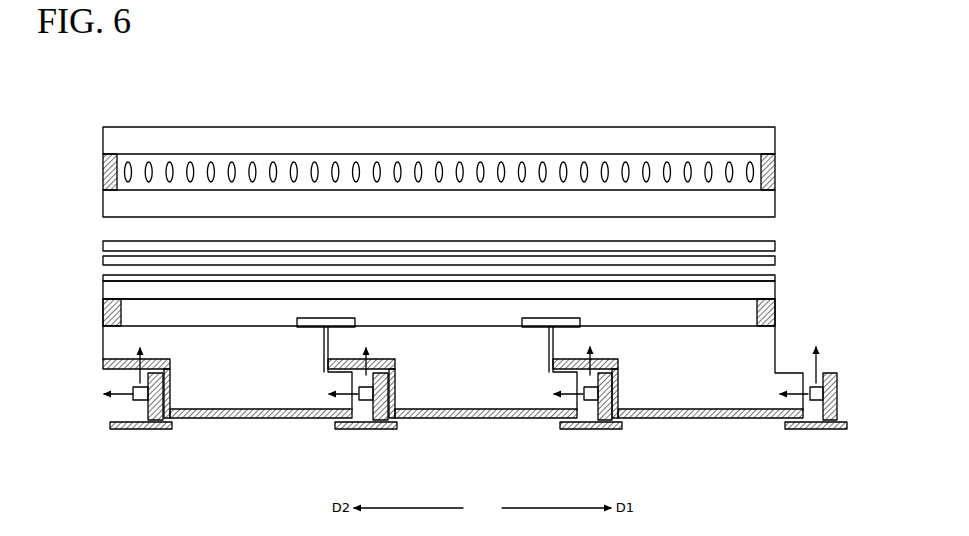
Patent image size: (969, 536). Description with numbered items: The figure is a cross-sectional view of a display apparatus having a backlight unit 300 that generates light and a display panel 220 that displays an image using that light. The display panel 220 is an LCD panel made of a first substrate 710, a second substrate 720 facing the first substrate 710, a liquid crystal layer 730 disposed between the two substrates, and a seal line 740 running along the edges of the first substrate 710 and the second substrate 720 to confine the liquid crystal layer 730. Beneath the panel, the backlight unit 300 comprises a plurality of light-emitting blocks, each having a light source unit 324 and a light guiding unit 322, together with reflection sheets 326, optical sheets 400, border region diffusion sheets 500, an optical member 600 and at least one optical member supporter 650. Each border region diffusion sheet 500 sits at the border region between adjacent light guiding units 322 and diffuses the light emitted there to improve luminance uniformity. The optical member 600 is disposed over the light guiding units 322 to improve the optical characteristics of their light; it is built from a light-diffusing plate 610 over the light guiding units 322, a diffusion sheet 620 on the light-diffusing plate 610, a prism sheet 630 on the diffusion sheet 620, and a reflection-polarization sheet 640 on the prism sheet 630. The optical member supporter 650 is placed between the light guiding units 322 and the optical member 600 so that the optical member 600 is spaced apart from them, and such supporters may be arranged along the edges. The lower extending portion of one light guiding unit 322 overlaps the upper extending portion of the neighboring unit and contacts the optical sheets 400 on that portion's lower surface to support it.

The display panel 220 is at (439, 138).
The seal line 740 is at (118, 165).
The liquid crystal layer 730 is at (277, 89).
The first substrate 710 is at (223, 200).
The second substrate 720 is at (262, 142).
The optical member 600 is at (486, 270).
The reflection-polarization sheet 640 is at (765, 246).
The prism sheet 630 is at (765, 259).
The diffusion sheet 620 is at (765, 274).
The light-diffusing plate 610 is at (465, 290).
The optical member supporter 650 is at (776, 310).
The backlight unit 300 is at (461, 354).
The border region diffusion sheet 500 is at (307, 322).
The optical sheet 400 is at (552, 364).
The light guiding unit 322 is at (423, 379).
The reflection sheet 326 is at (465, 419).
The light source unit 324 is at (625, 435).